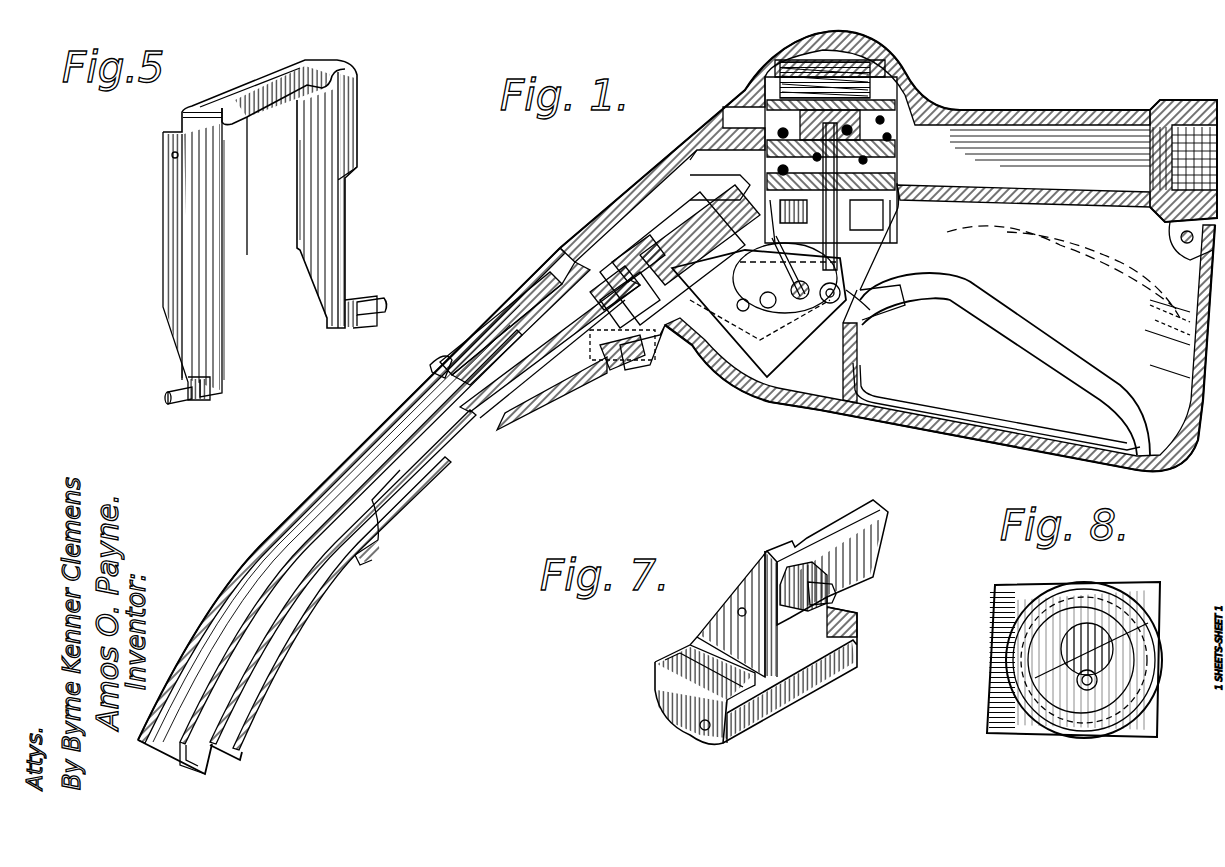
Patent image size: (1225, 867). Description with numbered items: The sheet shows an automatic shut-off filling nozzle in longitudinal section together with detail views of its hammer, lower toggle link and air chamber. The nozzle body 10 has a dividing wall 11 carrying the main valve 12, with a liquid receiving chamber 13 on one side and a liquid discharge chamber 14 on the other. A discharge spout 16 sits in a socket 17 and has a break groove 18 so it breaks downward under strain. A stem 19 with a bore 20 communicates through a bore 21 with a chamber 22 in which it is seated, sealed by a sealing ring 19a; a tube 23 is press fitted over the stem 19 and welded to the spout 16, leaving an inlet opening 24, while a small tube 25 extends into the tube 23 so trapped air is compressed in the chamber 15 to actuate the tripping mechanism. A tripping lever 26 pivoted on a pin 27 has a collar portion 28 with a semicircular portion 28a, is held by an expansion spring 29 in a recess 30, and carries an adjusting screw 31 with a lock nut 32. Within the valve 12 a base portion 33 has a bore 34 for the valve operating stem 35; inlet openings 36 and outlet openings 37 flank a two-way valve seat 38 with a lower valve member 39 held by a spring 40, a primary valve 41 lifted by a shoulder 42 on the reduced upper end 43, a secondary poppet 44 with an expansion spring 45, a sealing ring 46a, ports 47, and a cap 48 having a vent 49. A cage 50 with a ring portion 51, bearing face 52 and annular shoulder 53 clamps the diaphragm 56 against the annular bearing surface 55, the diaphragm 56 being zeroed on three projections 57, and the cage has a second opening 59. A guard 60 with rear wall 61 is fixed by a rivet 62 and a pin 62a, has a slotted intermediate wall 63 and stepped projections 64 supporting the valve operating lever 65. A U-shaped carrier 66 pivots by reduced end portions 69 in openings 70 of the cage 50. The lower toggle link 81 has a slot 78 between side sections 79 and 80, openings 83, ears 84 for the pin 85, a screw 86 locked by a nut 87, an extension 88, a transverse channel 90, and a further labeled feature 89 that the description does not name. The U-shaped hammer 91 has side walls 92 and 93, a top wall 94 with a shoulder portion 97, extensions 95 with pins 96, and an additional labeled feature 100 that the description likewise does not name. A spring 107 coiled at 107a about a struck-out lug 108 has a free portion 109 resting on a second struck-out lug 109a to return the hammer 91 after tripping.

In FIG. 1, the nozzle body 10 is at (1003, 112).
In FIG. 8, the nozzle body 10 is at (1155, 590).
In FIG. 1, the dividing wall 11 is at (735, 125).
In FIG. 1, the main valve 12 is at (712, 290).
In FIG. 1, the liquid receiving chamber 13 is at (1060, 140).
In FIG. 1, the liquid discharge chamber 14 is at (675, 170).
In FIG. 1, the chamber 15 is at (690, 225).
In FIG. 8, the chamber 15 is at (1140, 665).
In FIG. 1, the discharge spout 16 is at (378, 435).
In FIG. 1, the socket 17 is at (475, 332).
In FIG. 1, the break groove 18 is at (440, 366).
In FIG. 1, the stem 19 is at (595, 295).
In FIG. 1, the sealing ring 19a is at (622, 336).
In FIG. 1, the bore 20 is at (612, 285).
In FIG. 1, the bore 21 is at (645, 260).
In FIG. 1, the chamber 22 is at (630, 265).
In FIG. 1, the tube 23 is at (322, 585).
In FIG. 1, the inlet opening 24 is at (215, 752).
In FIG. 1, the small tube 25 is at (465, 440).
In FIG. 1, the tripping lever 26 is at (562, 428).
In FIG. 1, the pin 27 is at (791, 211).
In FIG. 1, the collar portion 28 is at (452, 350).
In FIG. 1, the semicircular portion 28a is at (380, 556).
In FIG. 1, the expansion spring 29 is at (620, 395).
In FIG. 1, the recess 30 is at (588, 410).
In FIG. 1, the adjusting screw 31 is at (712, 392).
In FIG. 1, the lock nut 32 is at (700, 380).
In FIG. 1, the base portion 33 is at (765, 190).
In FIG. 1, the bore 34 is at (866, 215).
In FIG. 1, the valve operating stem 35 is at (838, 262).
In FIG. 1, the inlet openings 36 is at (760, 112).
In FIG. 1, the outlet openings 37 is at (905, 150).
In FIG. 1, the two-way valve seat 38 is at (905, 134).
In FIG. 1, the lower valve member 39 is at (908, 162).
In FIG. 1, the expansion spring 40 is at (915, 180).
In FIG. 1, the primary valve 41 is at (890, 112).
In FIG. 1, the shoulder 42 is at (905, 98).
In FIG. 1, the reduced upper end 43 is at (895, 88).
In FIG. 1, the secondary poppet 44 is at (872, 75).
In FIG. 1, the expansion spring 45 is at (768, 85).
In FIG. 1, the sealing ring 46a is at (918, 118).
In FIG. 1, the ports 47 is at (762, 118).
In FIG. 1, the cap 48 is at (800, 52).
In FIG. 1, the vent 49 is at (838, 48).
In FIG. 1, the cage 50 is at (785, 352).
In FIG. 1, the ring portion 51 is at (715, 305).
In FIG. 1, the bearing face 52 is at (718, 200).
In FIG. 1, the annular shoulder 53 is at (690, 235).
In FIG. 8, the annular bearing surface 55 is at (1100, 684).
In FIG. 1, the diaphragm 56 is at (712, 215).
In FIG. 8, the diaphragm 56 is at (1110, 650).
In FIG. 1, the projections 57 is at (692, 220).
In FIG. 8, the projections 57 is at (1140, 618).
In FIG. 1, the second opening 59 is at (655, 355).
In FIG. 1, the guard 60 is at (1018, 430).
In FIG. 1, the rear wall 61 is at (760, 316).
In FIG. 1, the rivet 62 is at (1180, 237).
In FIG. 1, the pin 62a is at (650, 385).
In FIG. 1, the slotted intermediate wall 63 is at (857, 352).
In FIG. 1, the stepped projections 64 is at (1150, 305).
In FIG. 1, the valve operating lever 65 is at (1020, 315).
In FIG. 1, the U-shaped carrier 66 is at (755, 312).
In FIG. 1, the reduced end portions 69 is at (825, 306).
In FIG. 1, the openings 70 is at (855, 300).
In FIG. 7, the slot 78 is at (800, 545).
In FIG. 7, the side section 79 is at (778, 555).
In FIG. 7, the side section 80 is at (818, 530).
In FIG. 7, the lower toggle link 81 is at (800, 695).
In FIG. 7, the openings 83 is at (735, 610).
In FIG. 7, the ears 84 is at (720, 745).
In FIG. 1, the pin 85 is at (775, 368).
In FIG. 1, the screw 86 is at (795, 305).
In FIG. 7, the screw 86 is at (835, 594).
In FIG. 7, the nut 87 is at (835, 545).
In FIG. 7, the extension 88 is at (862, 502).
In FIG. 7, the edge 89 is at (850, 668).
In FIG. 7, the transverse channel 90 is at (690, 655).
In FIG. 5, the U-shaped hammer 91 is at (371, 160).
In FIG. 5, the side wall 92 is at (226, 256).
In FIG. 5, the side wall 93 is at (305, 188).
In FIG. 5, the top wall 94 is at (225, 95).
In FIG. 5, the extensions 95 is at (355, 330).
In FIG. 5, the pins 96 is at (375, 300).
In FIG. 5, the shoulder portion 97 is at (270, 90).
In FIG. 5, the hole 100 is at (170, 157).
In FIG. 1, the spring 107 is at (870, 320).
In FIG. 1, the coil 107a is at (885, 268).
In FIG. 1, the struck-out lug 108 is at (880, 285).
In FIG. 1, the free portion 109 is at (772, 236).
In FIG. 1, the second struck-out lug 109a is at (790, 263).